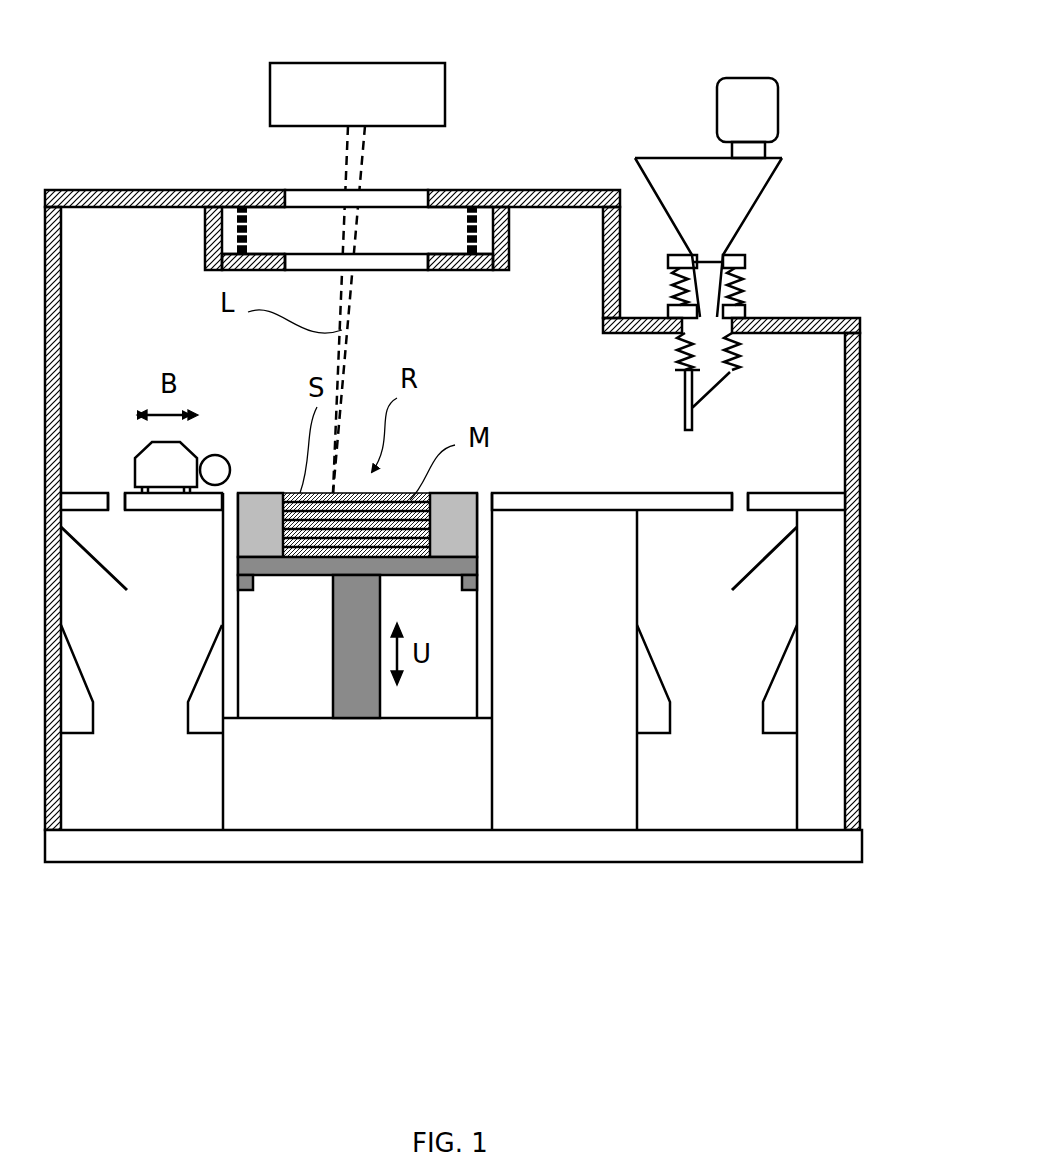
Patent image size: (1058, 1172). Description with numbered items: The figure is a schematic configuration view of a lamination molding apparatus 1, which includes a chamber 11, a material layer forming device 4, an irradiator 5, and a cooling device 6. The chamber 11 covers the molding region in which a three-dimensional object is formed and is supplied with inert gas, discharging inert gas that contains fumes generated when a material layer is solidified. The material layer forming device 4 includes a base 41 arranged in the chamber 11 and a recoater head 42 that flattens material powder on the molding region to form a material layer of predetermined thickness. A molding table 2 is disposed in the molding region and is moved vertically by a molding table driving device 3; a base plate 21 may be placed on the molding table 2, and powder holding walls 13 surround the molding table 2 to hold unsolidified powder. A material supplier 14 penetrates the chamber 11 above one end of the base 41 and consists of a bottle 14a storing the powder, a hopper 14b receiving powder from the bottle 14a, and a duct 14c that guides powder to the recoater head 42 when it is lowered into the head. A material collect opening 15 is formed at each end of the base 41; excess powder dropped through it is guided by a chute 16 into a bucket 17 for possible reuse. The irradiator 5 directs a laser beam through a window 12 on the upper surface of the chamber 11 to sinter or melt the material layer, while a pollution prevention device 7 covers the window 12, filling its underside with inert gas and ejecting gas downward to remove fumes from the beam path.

The lamination molding apparatus 1 is at (125, 125).
The molding table 2 is at (308, 565).
The molding table driving device 3 is at (365, 705).
The material layer forming device 4 is at (205, 401).
The irradiator 5 is at (445, 100).
The cooling device 6 is at (228, 470).
The pollution prevention device 7 is at (477, 262).
The chamber 11 is at (538, 190).
The window 12 is at (300, 195).
The powder holding walls 13 is at (484, 655).
The material supplier 14 is at (787, 242).
The bottle 14a is at (770, 100).
The hopper 14b is at (743, 195).
The duct 14c is at (700, 378).
The material collect opening 15 is at (118, 493).
The chute 16 is at (105, 560).
The bucket 17 is at (140, 800).
The base plate 21 is at (420, 555).
The base 41 is at (556, 500).
The recoater head 42 is at (183, 462).